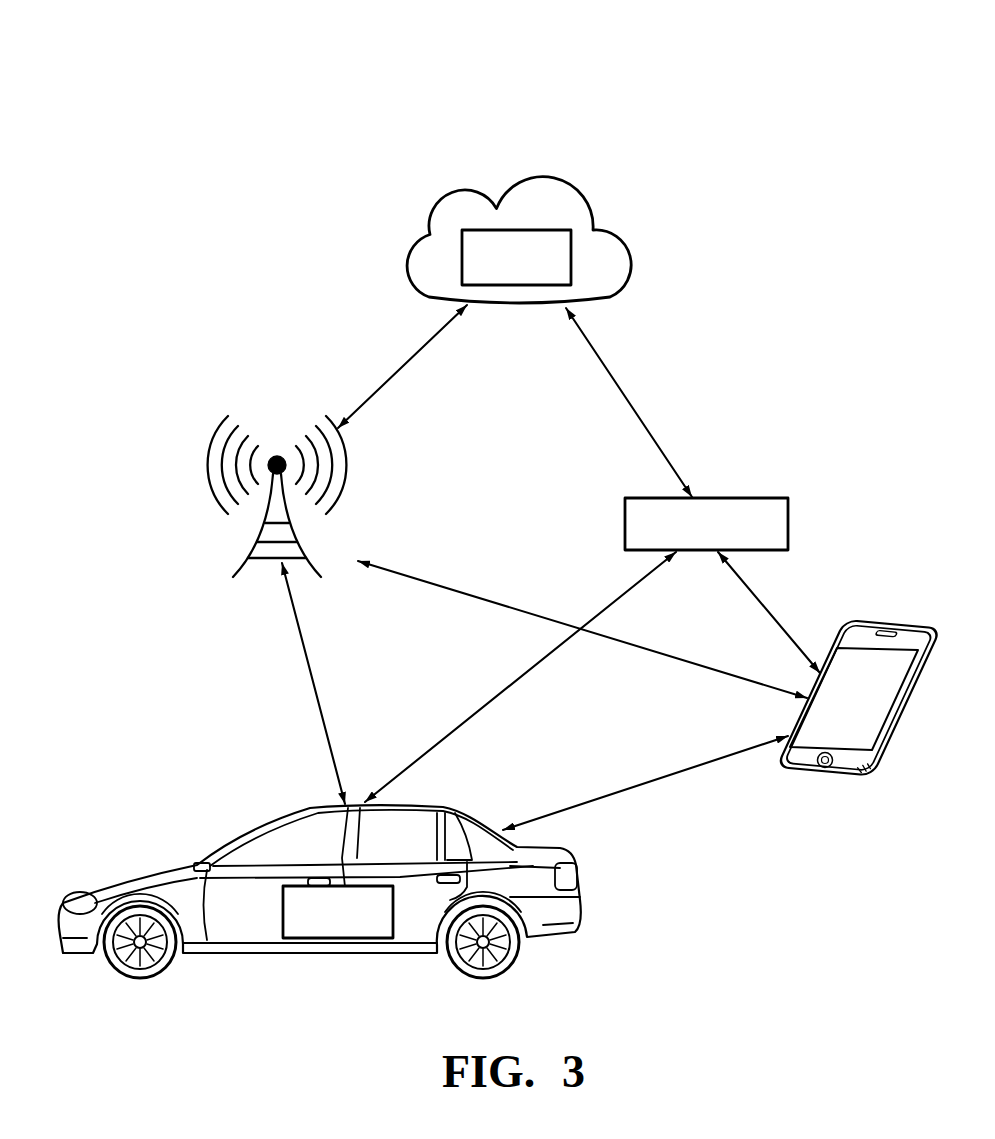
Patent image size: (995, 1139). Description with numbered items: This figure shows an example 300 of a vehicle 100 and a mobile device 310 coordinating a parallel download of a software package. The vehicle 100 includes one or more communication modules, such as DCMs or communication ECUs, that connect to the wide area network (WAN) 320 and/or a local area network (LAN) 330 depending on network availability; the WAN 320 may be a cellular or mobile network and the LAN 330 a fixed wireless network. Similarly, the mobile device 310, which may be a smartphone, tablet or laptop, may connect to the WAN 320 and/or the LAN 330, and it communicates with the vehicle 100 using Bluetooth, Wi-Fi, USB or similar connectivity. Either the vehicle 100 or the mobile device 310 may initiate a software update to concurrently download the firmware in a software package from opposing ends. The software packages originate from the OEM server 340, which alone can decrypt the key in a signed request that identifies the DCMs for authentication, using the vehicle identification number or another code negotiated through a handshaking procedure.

The example 300 is at (825, 90).
The OEM server 340 is at (606, 226).
The wide area network (WAN) 320 is at (226, 418).
The local area network (LAN) 330 is at (750, 498).
The mobile device 310 is at (845, 785).
The vehicle 100 is at (168, 865).